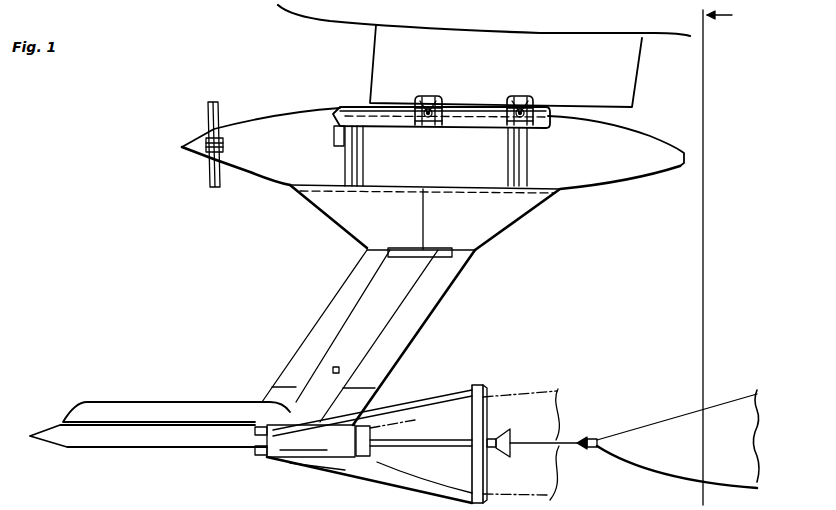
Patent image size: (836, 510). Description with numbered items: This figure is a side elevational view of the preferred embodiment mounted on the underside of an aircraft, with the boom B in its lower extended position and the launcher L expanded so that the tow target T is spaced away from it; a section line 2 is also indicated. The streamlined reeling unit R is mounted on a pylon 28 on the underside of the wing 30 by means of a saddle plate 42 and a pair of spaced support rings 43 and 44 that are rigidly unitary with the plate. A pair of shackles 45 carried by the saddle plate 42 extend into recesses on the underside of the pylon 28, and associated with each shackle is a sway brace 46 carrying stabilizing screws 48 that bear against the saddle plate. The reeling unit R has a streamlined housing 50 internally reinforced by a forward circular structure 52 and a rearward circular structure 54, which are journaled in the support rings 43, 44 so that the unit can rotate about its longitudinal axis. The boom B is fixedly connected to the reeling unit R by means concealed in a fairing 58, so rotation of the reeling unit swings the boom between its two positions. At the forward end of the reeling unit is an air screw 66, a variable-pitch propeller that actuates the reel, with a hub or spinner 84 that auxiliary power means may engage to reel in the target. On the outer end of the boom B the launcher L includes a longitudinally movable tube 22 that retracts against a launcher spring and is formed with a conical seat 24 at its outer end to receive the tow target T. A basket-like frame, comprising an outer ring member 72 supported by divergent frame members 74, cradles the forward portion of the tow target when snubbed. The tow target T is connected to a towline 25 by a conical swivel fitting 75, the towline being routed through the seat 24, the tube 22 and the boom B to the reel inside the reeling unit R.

The section line 2- 2 is at (718, 257).
The longitudinally movable tube 22 is at (441, 448).
The conical seat 24 is at (398, 487).
The towline 25 is at (554, 448).
The pylon 28 is at (370, 48).
The wing 30 is at (316, 18).
The saddle plate 42 is at (362, 107).
The support ring 43 is at (357, 159).
The support ring 44 is at (520, 151).
The shackle 45 is at (438, 97).
The sway brace 46 is at (447, 109).
The stabilizing screw 48 is at (430, 118).
The streamlined housing 50 is at (627, 163).
The forward circular structure 52 is at (345, 168).
The rearward circular structure 54 is at (527, 171).
The fairing 58 is at (505, 216).
The air screw 66 is at (208, 177).
The outer ring member 72 is at (484, 416).
The divergent frame member 74 is at (408, 406).
The conical swivel fitting 75 is at (582, 437).
The hub or spinner 84 is at (190, 150).
The boom B is at (320, 320).
The launcher L is at (169, 450).
The reeling unit R is at (268, 189).
The tow target T is at (713, 401).